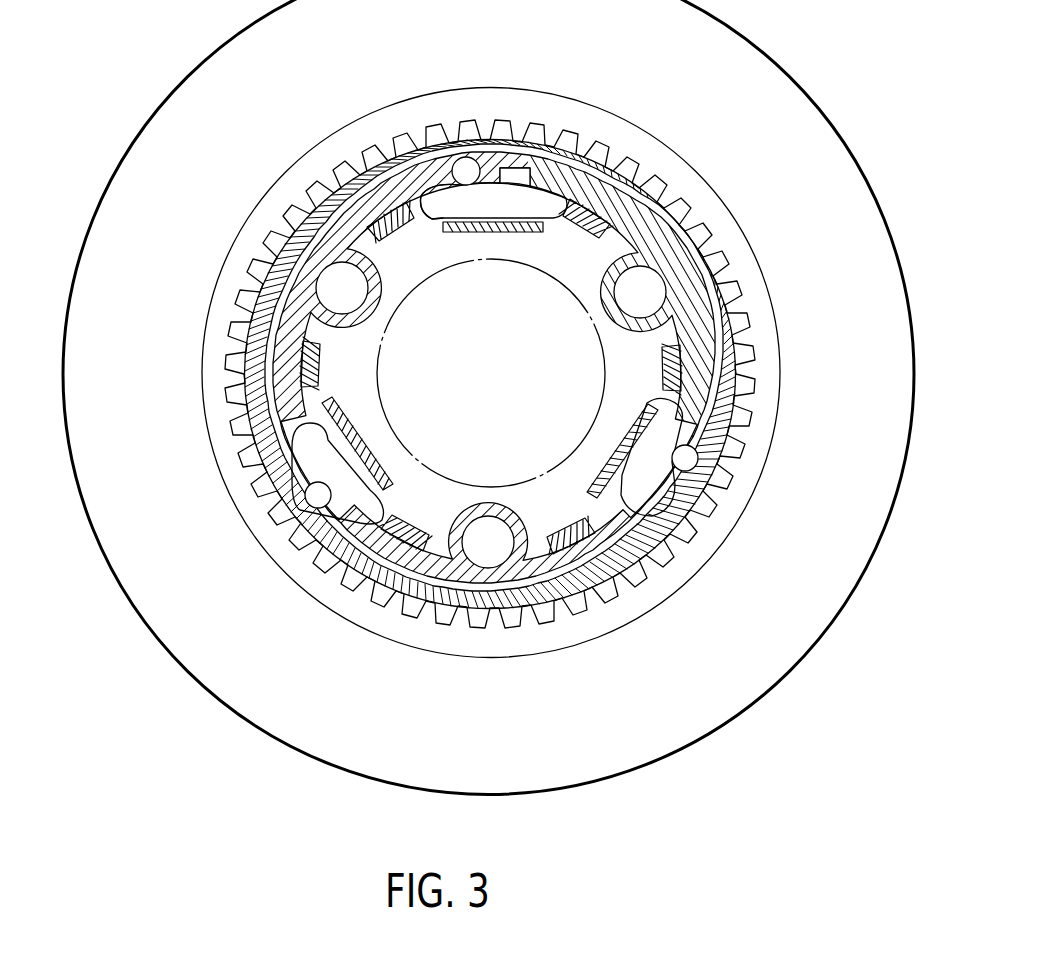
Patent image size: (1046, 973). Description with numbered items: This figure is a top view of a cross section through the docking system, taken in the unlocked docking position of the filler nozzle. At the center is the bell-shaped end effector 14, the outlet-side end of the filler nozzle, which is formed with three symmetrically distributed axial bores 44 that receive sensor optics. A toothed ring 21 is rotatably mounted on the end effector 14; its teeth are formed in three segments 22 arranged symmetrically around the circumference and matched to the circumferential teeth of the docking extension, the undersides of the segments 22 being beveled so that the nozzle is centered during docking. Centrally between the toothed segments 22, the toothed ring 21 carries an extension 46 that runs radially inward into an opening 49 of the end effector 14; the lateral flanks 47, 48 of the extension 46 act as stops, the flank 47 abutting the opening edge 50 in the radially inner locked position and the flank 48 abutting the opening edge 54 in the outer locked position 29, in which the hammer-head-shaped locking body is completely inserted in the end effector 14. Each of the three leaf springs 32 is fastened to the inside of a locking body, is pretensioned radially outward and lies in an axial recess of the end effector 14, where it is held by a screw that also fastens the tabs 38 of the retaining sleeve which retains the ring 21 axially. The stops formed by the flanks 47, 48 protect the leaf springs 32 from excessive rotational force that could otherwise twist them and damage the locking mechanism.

The end effector 14 is at (672, 206).
The toothed ring 21 is at (347, 577).
The toothed segments 22 is at (718, 237).
The locked position 29 is at (687, 525).
The leaf spring 32 is at (620, 447).
The tabs 38 is at (600, 215).
The axial bores 44 is at (652, 293).
The extension 46 is at (302, 472).
The lateral flank 47 is at (413, 172).
The lateral flank 48 is at (472, 156).
The openings 49 is at (528, 178).
The opening edge 50 is at (437, 222).
The opening edge 54 is at (540, 165).